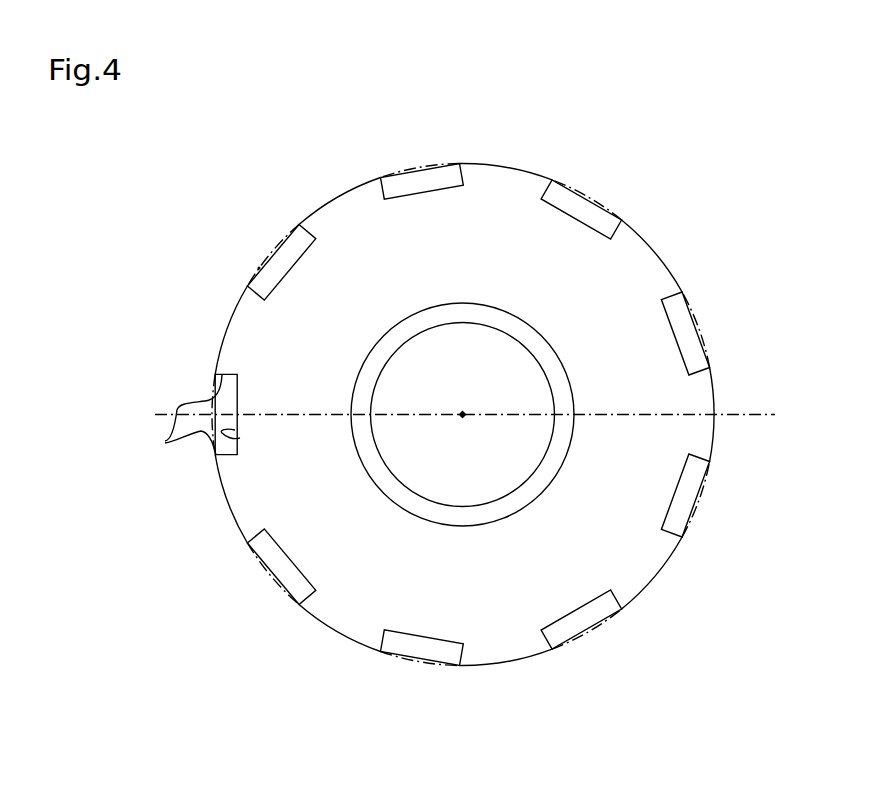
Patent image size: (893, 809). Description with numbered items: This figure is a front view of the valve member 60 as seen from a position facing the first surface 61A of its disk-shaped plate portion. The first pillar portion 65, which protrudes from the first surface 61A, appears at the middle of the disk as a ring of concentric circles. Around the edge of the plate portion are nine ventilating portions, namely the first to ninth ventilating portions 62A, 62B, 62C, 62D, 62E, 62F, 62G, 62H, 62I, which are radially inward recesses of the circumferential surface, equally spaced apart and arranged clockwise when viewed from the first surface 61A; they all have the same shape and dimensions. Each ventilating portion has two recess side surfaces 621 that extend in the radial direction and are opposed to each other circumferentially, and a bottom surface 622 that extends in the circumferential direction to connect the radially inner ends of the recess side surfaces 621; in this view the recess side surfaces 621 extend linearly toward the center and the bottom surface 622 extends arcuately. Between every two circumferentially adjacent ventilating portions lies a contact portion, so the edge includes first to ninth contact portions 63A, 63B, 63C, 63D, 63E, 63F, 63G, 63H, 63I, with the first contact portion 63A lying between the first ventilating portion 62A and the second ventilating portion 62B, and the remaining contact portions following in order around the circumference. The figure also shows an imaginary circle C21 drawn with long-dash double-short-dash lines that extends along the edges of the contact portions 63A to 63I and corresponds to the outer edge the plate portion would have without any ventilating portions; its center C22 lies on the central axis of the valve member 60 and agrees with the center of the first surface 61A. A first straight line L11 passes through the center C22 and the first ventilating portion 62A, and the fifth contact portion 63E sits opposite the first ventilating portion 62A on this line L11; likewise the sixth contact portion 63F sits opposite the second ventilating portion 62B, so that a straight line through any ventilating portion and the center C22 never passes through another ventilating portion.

The valve member 60 is at (689, 195).
The first surface 61A is at (475, 262).
The first ventilating portion 62A is at (190, 392).
The second ventilating portion 62B is at (284, 264).
The third ventilating portion 62C is at (420, 180).
The fourth ventilating portion 62D is at (597, 208).
The fifth ventilating portion 62E is at (682, 333).
The sixth ventilating portion 62F is at (685, 496).
The seventh ventilating portion 62G is at (583, 618).
The eighth ventilating portion 62H is at (417, 650).
The ninth ventilating portion 62I is at (286, 568).
The first contact portion 63A is at (227, 329).
The second contact portion 63B is at (337, 197).
The third contact portion 63C is at (507, 170).
The fourth contact portion 63D is at (655, 253).
The fifth contact portion 63E is at (713, 437).
The sixth contact portion 63F is at (652, 580).
The seventh contact portion 63G is at (505, 662).
The eighth contact portion 63H is at (337, 632).
The ninth contact portion 63I is at (228, 498).
The recess side surfaces 621 is at (168, 416).
The bottom surface 622 is at (235, 430).
The first pillar portion 65 is at (522, 378).
The imaginary circle C21 is at (258, 268).
The center C22 is at (462, 411).
The first straight line L11 is at (290, 410).